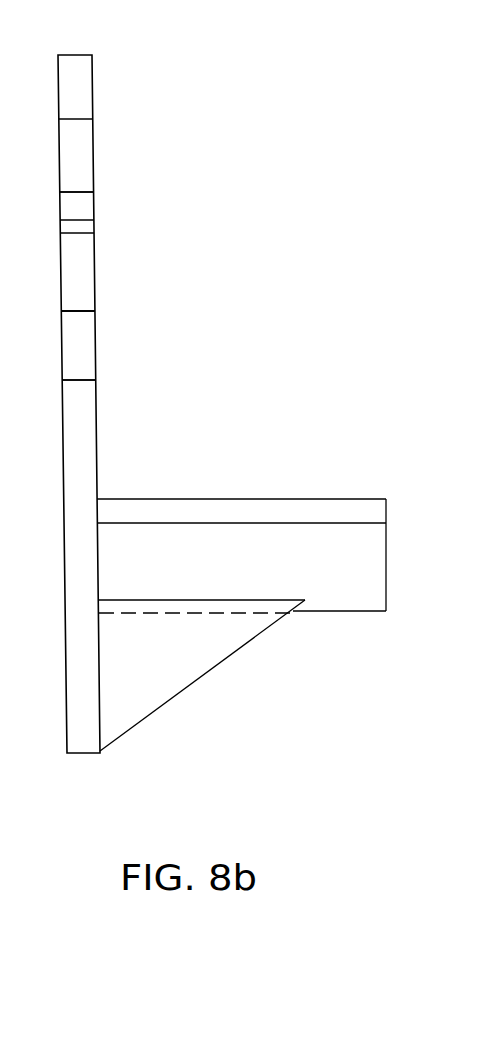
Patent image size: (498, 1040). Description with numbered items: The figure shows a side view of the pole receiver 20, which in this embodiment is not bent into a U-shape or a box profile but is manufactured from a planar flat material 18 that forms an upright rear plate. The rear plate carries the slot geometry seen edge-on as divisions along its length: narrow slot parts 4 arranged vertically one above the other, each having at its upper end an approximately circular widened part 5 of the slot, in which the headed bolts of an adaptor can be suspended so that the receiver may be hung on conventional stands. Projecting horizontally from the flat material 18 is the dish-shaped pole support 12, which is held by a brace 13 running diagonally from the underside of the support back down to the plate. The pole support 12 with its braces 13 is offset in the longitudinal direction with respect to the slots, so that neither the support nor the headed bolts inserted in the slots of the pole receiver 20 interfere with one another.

The narrow slot part 4 is at (86, 278).
The widened part of the slot 5 is at (86, 356).
The planar flat material 18 is at (149, 401).
The dish-shaped pole support 12 is at (260, 502).
The brace 13 is at (218, 655).
The pole receiver 20 is at (328, 322).